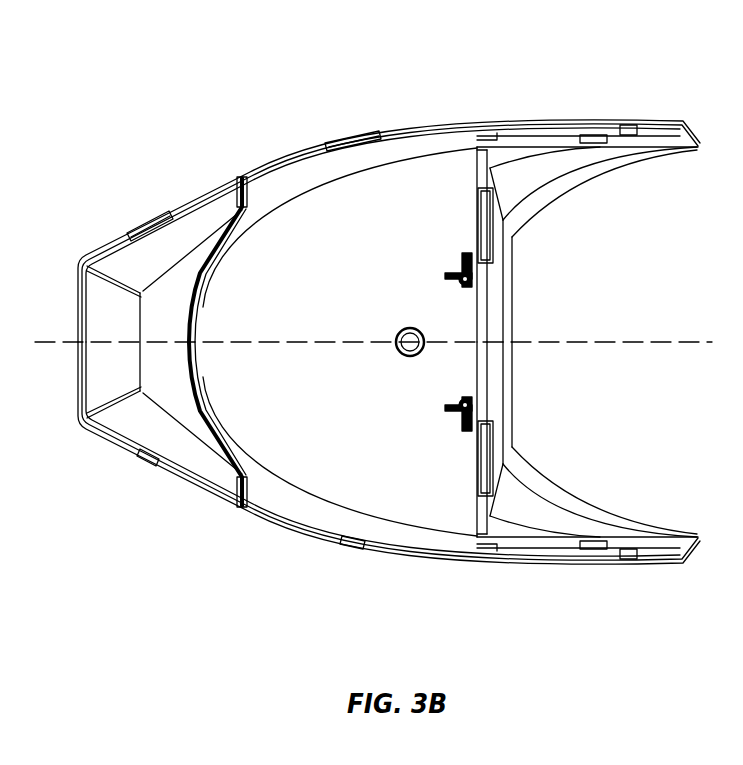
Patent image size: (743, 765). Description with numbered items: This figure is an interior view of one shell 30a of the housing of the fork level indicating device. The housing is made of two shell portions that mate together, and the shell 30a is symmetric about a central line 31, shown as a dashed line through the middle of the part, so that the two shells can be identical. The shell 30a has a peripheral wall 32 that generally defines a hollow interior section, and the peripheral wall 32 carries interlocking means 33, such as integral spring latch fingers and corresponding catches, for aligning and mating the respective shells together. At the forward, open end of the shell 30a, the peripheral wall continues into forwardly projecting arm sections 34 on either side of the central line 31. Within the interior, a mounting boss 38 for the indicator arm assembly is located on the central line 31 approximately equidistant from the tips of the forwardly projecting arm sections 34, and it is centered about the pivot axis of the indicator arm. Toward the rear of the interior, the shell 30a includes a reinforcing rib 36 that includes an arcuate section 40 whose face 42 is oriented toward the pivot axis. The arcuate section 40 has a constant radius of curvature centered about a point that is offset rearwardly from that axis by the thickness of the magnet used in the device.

The shell 30a is at (275, 152).
The central line 31 is at (608, 337).
The peripheral wall 32 is at (194, 466).
The interlocking means 33 is at (142, 224).
The forwardly projecting arm sections 34 is at (518, 133).
The reinforcing rib 36 is at (197, 273).
The mounting boss 38 is at (399, 334).
The arcuate section 40 is at (186, 357).
The face 42 is at (201, 318).